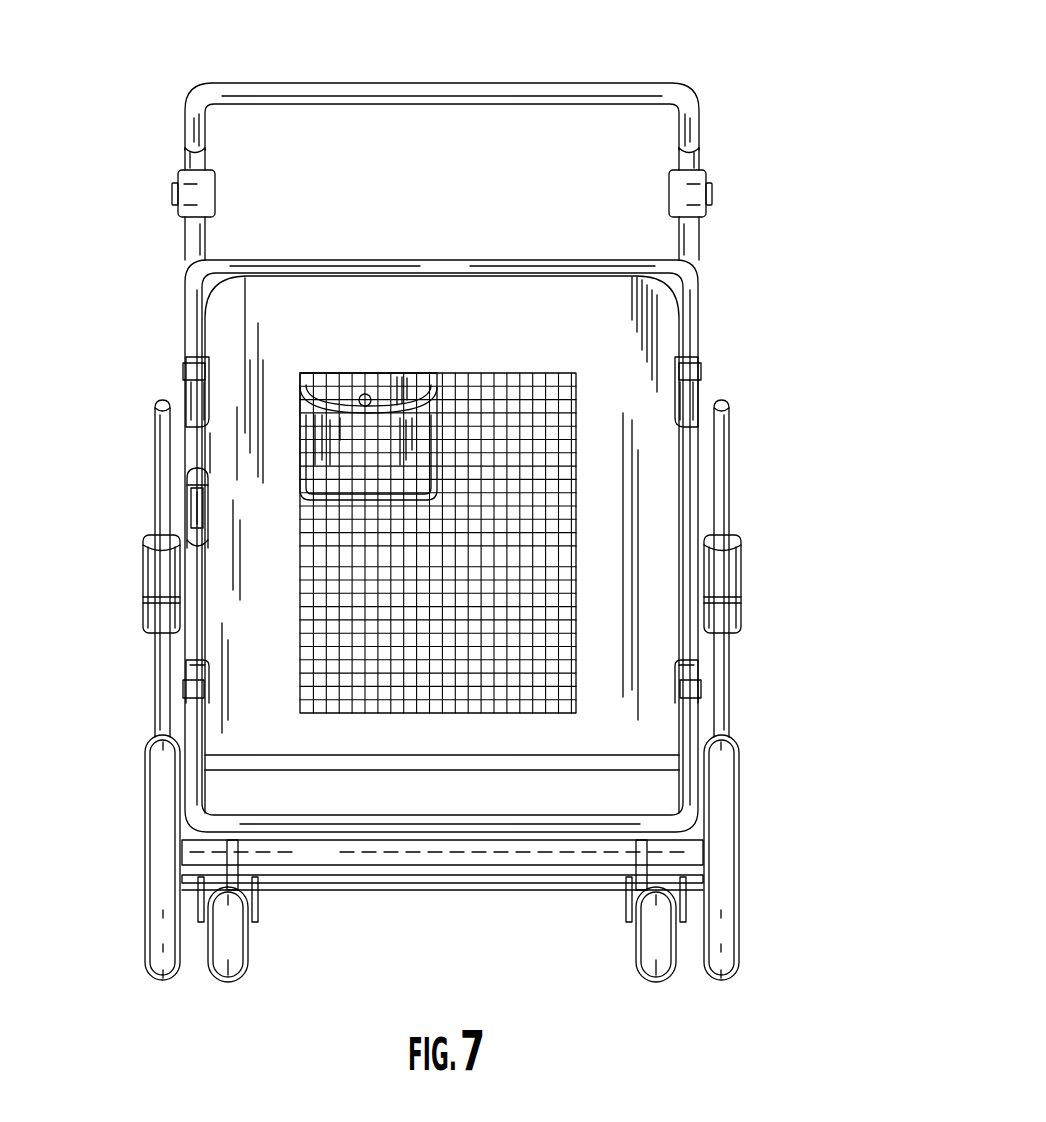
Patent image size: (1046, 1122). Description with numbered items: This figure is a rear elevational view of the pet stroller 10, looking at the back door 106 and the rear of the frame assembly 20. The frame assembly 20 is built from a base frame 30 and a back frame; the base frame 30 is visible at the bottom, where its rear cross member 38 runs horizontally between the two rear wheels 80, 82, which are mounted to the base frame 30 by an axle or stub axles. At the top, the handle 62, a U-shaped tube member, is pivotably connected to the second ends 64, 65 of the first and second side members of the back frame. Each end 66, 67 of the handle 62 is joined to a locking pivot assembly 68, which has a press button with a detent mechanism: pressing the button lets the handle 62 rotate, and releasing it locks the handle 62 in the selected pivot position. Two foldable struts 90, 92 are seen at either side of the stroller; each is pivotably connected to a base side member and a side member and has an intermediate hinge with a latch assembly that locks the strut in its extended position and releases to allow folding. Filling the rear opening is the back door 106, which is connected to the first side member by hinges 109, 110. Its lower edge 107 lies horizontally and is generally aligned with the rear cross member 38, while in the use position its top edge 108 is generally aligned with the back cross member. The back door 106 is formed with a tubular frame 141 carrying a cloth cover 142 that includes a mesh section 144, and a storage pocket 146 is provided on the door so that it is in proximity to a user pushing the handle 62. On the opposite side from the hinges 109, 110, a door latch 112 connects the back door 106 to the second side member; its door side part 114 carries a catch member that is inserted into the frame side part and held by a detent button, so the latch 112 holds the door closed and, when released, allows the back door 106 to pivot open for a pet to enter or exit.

The pet stroller 10 is at (740, 72).
The frame assembly 20 is at (745, 655).
The base frame 30 is at (286, 886).
The rear cross member 38 is at (517, 876).
The handle 62 is at (446, 83).
The second end of first side member 64 is at (700, 248).
The second end of second side member 65 is at (185, 238).
The handle end 66 is at (679, 153).
The handle end 67 is at (207, 158).
The locking pivot assembly 68 is at (172, 194).
The rear wheel 80 is at (721, 982).
The rear wheel 82 is at (163, 982).
The foldable strut 90 is at (730, 478).
The foldable strut 92 is at (155, 474).
The back door 106 is at (678, 548).
The lower edge 107 is at (362, 833).
The top edge 108 is at (414, 262).
The hinge 109 is at (700, 366).
The hinge 110 is at (692, 690).
The door latch 112 is at (175, 510).
The door side part 114 is at (198, 518).
The tubular frame 141 is at (190, 546).
The cloth cover 142 is at (665, 607).
The mesh section 144 is at (535, 715).
The storage pocket 146 is at (325, 437).